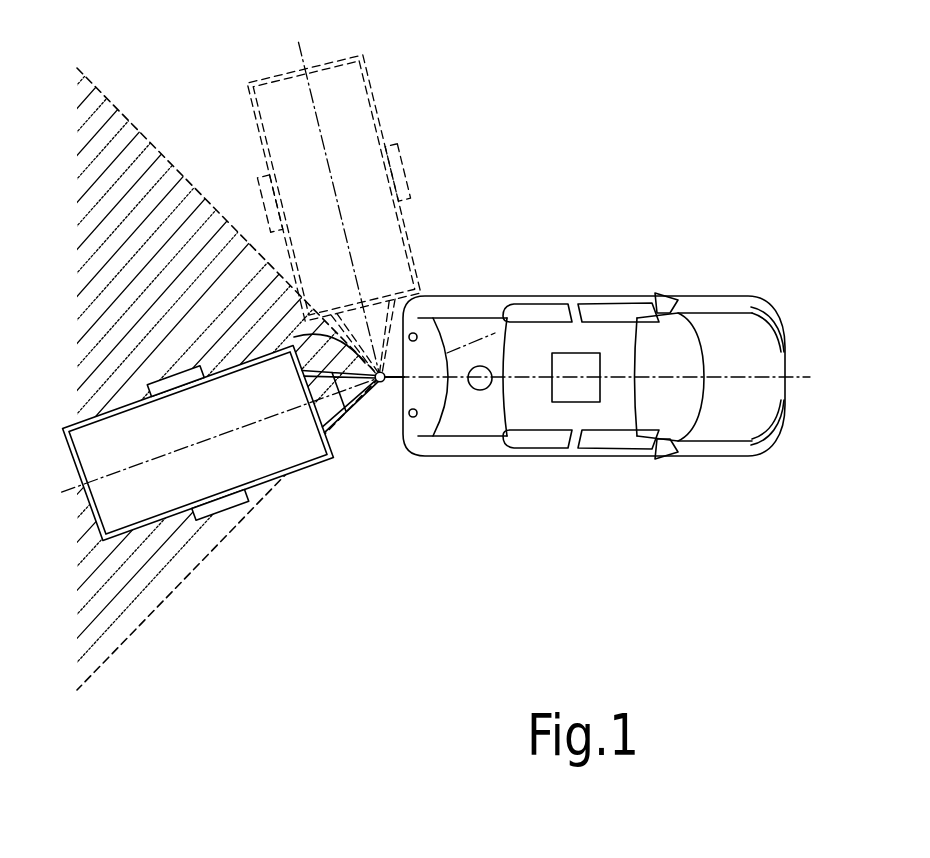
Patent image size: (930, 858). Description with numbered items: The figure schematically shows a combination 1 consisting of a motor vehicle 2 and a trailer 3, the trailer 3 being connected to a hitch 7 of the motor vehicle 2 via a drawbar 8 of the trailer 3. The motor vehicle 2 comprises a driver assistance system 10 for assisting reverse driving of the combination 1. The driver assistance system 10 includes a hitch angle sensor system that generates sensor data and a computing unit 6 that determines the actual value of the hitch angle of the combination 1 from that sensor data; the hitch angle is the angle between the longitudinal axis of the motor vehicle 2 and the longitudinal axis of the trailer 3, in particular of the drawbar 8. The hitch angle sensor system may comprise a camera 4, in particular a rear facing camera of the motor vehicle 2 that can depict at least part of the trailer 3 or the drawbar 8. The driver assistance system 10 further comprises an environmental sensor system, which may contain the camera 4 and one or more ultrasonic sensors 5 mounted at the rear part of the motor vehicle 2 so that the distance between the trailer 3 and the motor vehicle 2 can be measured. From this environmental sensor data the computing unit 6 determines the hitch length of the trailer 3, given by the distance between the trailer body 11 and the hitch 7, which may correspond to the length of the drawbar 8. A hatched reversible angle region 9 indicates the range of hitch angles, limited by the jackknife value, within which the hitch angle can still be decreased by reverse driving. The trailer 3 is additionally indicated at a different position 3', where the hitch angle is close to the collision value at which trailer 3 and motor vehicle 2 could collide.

The combination 1 is at (374, 557).
The motor vehicle 2 is at (710, 456).
The trailer 3 is at (221, 434).
The different position of the trailer 3' is at (353, 209).
The camera 4 is at (480, 390).
The ultrasonic sensors 5 is at (412, 328).
The computing unit 6 is at (573, 358).
The hitch 7 is at (377, 383).
The drawbar 8 is at (294, 337).
The reversible angle region 9 is at (100, 302).
The driver assistance system 10 is at (558, 480).
The trailer body 11 is at (325, 469).